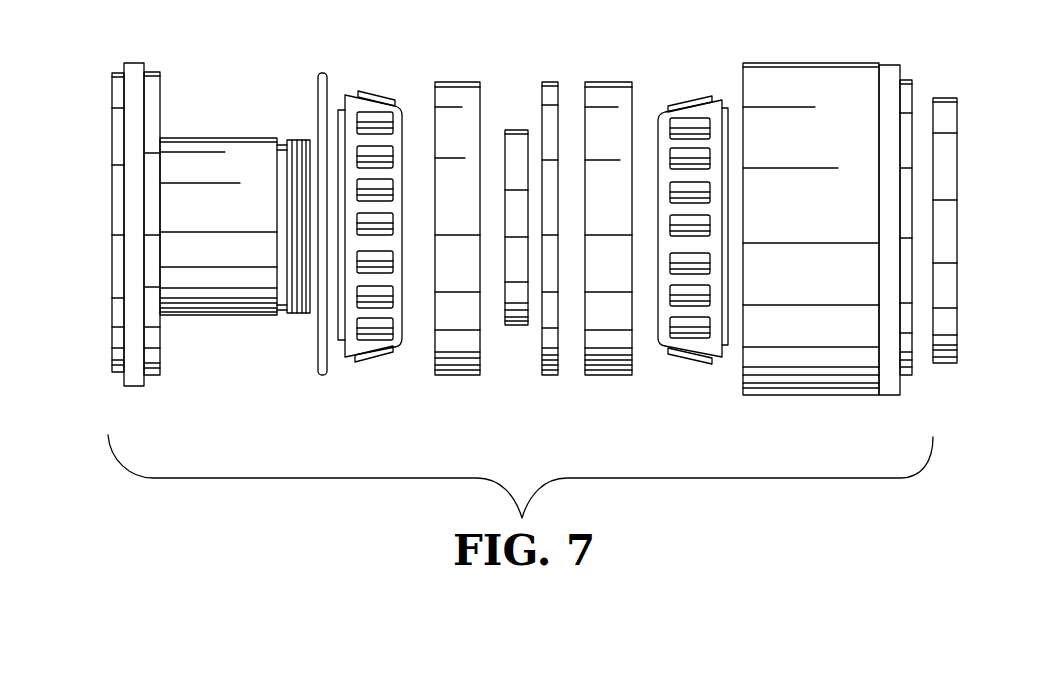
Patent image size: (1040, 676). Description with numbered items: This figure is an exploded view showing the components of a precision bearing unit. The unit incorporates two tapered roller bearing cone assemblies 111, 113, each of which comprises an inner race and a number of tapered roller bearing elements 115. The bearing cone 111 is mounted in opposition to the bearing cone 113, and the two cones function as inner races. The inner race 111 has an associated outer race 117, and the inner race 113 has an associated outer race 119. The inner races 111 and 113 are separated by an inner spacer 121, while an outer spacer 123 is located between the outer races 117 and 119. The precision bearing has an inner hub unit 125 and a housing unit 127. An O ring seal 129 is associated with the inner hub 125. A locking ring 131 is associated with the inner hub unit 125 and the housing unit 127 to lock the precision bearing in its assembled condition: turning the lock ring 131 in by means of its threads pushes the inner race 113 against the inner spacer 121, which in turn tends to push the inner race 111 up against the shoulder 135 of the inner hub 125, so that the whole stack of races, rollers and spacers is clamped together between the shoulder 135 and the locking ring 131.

The cone assembly 111 is at (350, 357).
The cone assembly 113 is at (715, 362).
The tapered roller bearing elements 115 is at (378, 120).
The outer race 117 is at (457, 82).
The outer race 119 is at (608, 82).
The inner spacer 121 is at (516, 325).
The outer spacer 123 is at (550, 375).
The inner hub unit 125 is at (225, 138).
The housing unit 127 is at (835, 63).
The O ring seal 129 is at (318, 362).
The locking ring 131 is at (957, 147).
The shoulder 135 is at (160, 86).